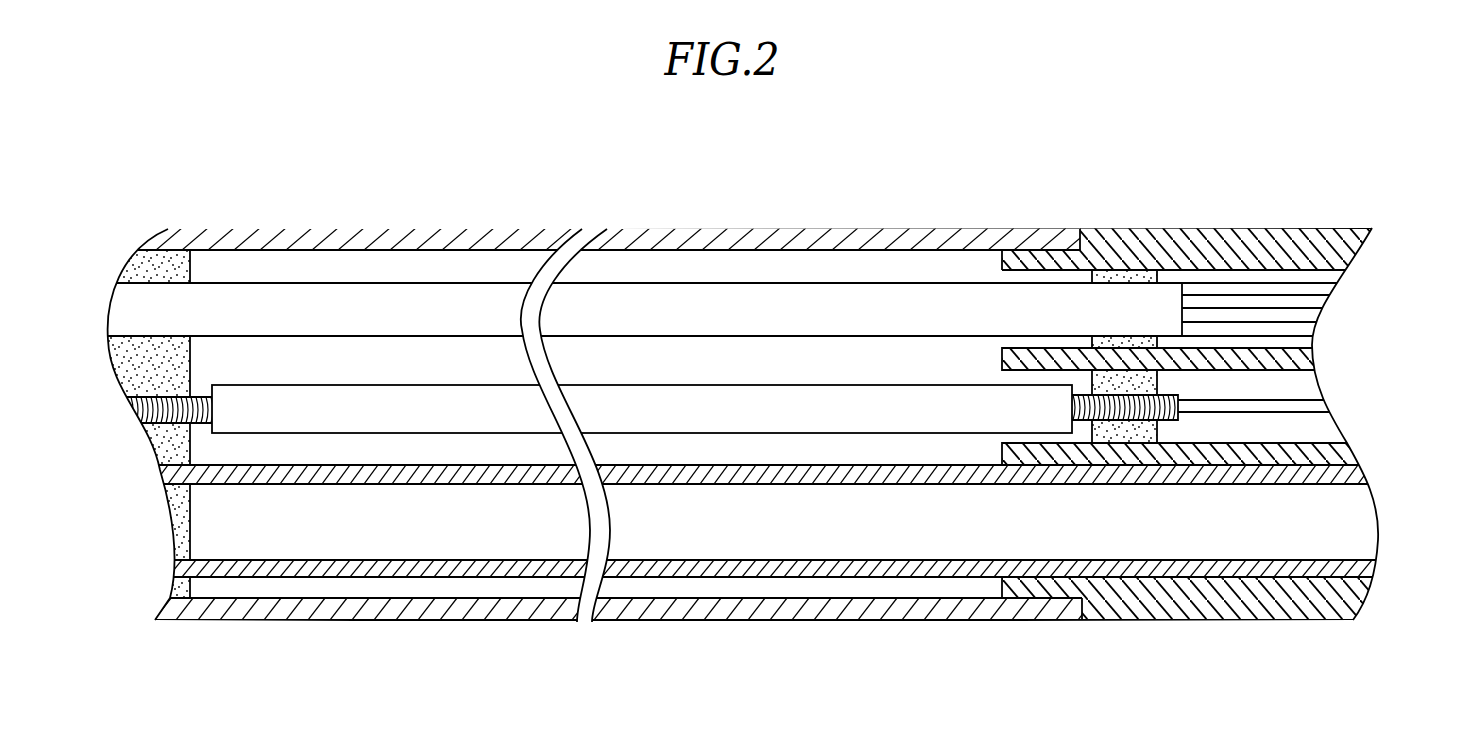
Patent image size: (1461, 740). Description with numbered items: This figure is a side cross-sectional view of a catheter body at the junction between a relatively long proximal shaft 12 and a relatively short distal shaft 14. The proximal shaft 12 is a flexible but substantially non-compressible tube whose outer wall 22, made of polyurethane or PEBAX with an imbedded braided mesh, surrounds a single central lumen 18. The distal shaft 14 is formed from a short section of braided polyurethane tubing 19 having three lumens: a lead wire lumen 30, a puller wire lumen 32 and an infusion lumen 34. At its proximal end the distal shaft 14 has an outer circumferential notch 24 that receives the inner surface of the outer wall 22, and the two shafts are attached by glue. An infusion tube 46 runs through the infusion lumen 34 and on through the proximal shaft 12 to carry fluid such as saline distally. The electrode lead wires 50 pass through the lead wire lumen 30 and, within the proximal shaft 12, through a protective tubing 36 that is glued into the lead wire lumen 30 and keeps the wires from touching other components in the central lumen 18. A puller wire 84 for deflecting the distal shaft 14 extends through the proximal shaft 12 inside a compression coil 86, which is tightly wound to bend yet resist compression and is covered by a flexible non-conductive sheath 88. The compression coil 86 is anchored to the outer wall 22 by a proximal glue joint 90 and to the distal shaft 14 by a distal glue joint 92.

The proximal shaft 12 is at (636, 642).
The distal shaft 14 is at (1203, 670).
The central lumen 18 is at (905, 445).
The tubing 19 is at (1228, 232).
The outer wall 22 is at (798, 240).
The outer circumferential notch 24 is at (1057, 244).
The lead wire lumen 30 is at (1298, 276).
The puller wire lumen 32 is at (1298, 425).
The infusion lumen 34 is at (1372, 570).
The protective tubing 36 is at (683, 308).
The infusion tube 46 is at (1355, 474).
The electrode lead wires 50 is at (1268, 300).
The puller wire 84 is at (1297, 405).
The compression coil 86 is at (143, 430).
The non-conductive sheath 88 is at (790, 412).
The proximal glue joint 90 is at (193, 587).
The distal glue joint 92 is at (1130, 430).